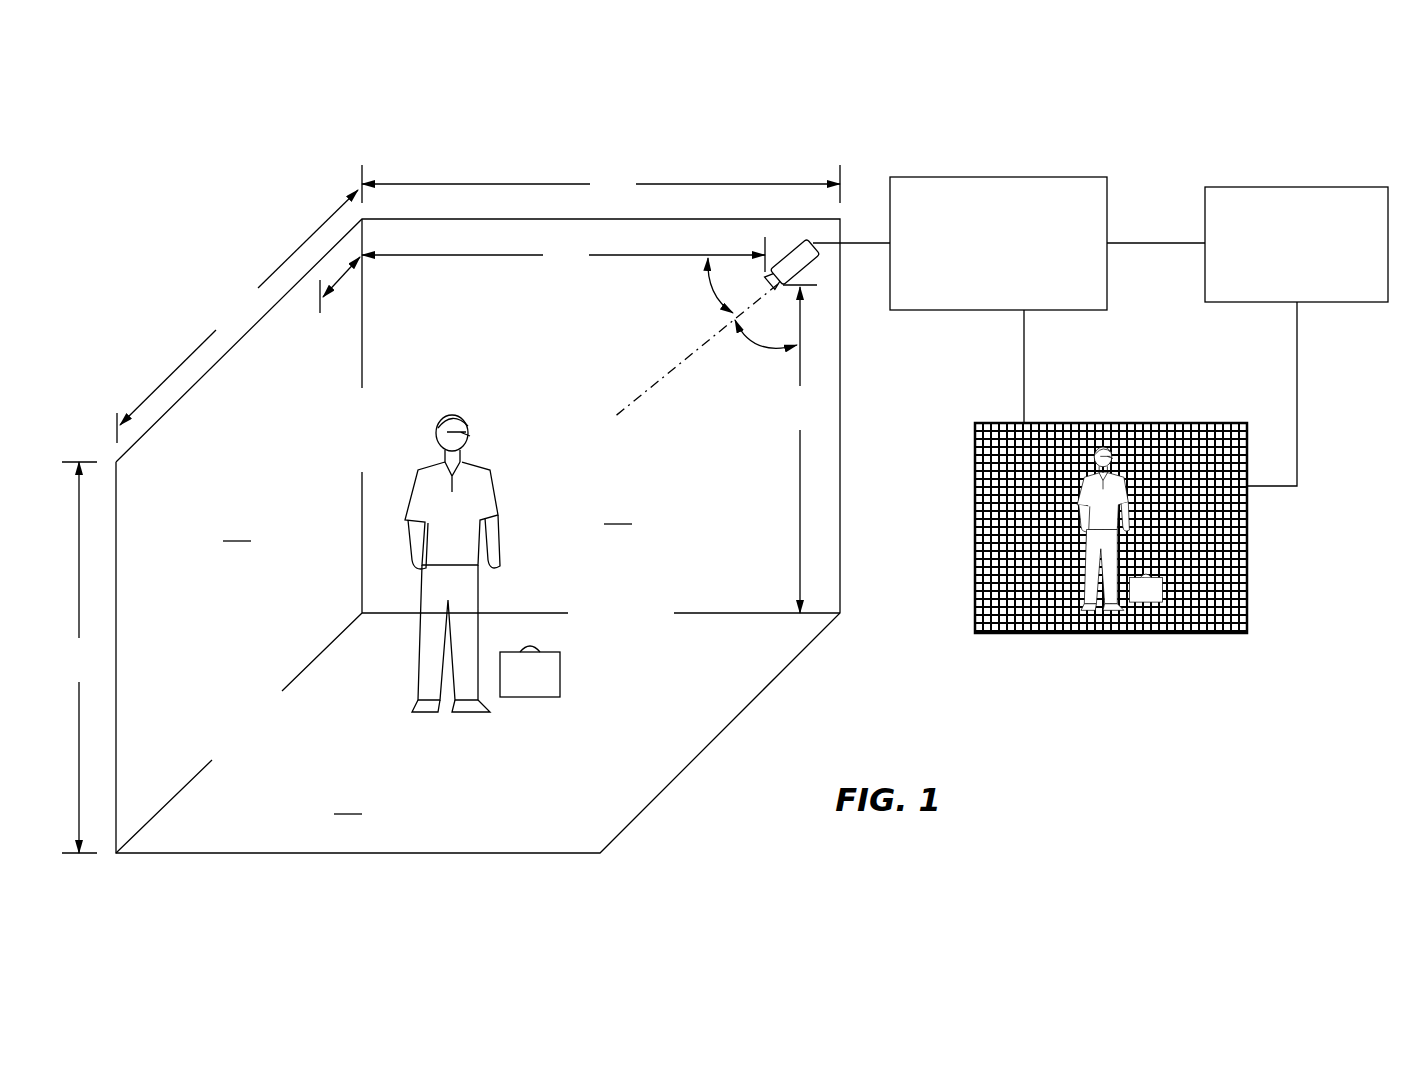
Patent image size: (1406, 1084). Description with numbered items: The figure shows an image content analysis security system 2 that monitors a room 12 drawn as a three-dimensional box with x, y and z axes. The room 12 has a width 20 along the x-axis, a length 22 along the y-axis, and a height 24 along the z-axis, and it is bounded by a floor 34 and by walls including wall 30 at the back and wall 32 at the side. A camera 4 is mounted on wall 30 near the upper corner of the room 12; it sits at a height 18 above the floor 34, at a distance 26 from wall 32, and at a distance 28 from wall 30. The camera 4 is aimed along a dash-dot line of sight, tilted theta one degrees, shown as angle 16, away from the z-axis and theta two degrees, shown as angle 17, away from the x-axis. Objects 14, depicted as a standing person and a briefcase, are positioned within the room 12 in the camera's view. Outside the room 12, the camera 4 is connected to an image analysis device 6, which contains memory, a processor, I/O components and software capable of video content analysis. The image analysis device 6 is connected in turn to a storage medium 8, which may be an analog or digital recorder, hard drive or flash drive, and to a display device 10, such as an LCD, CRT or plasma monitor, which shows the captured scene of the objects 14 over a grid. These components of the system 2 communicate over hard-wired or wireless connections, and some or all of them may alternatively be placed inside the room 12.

The image content analysis security system 2 is at (1036, 746).
The camera 4 is at (806, 259).
The image analysis device 6 is at (1043, 177).
The storage medium 8 is at (1270, 187).
The display device 10 is at (1247, 570).
The room 12 is at (196, 198).
The objects 14 is at (520, 686).
The angle 16 is at (736, 336).
The angle 17 is at (707, 270).
The height 18 is at (798, 449).
The width 20 is at (601, 184).
The length 22 is at (237, 316).
The height 24 is at (79, 657).
The distance 26 is at (563, 254).
The distance 28 is at (343, 285).
The wall 30 is at (618, 510).
The wall 32 is at (237, 527).
The floor 34 is at (348, 800).